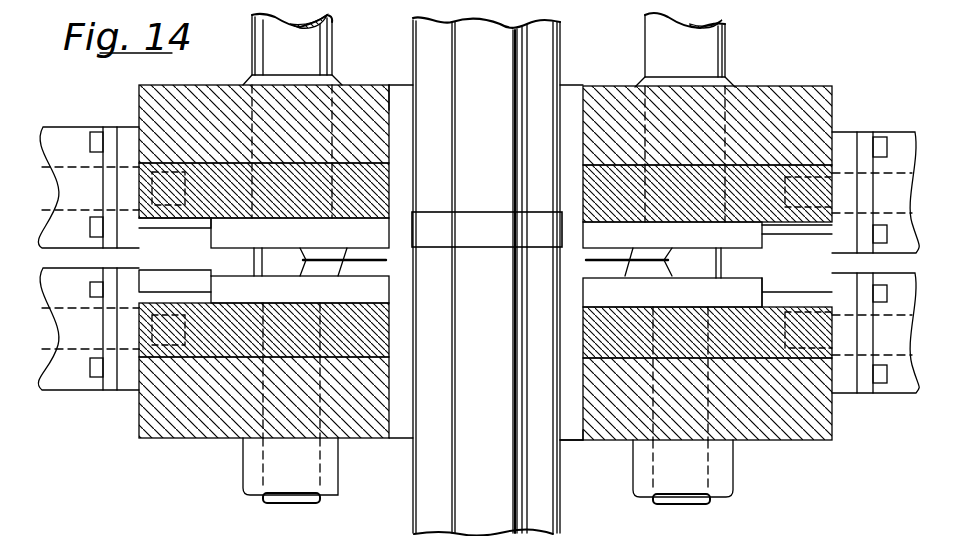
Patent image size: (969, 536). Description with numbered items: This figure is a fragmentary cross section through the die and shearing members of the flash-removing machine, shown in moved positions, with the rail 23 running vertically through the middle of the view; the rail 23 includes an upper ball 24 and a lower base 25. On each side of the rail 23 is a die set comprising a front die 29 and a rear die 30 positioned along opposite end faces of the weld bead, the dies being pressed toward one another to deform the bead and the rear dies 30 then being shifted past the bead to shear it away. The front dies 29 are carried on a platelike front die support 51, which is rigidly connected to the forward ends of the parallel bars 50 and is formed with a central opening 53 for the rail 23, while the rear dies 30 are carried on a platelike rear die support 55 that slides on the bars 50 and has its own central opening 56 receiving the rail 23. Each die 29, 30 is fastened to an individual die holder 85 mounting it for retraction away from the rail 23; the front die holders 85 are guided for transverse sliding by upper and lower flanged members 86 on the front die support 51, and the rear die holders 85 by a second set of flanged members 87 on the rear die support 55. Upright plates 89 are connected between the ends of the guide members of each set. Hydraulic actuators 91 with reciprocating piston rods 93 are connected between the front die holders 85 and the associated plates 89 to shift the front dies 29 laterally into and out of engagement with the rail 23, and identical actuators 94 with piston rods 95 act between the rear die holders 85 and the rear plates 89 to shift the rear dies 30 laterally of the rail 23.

The rail 23 is at (557, 55).
The upper ball 24 is at (465, 483).
The lower base 25 is at (418, 476).
The front die 29 is at (344, 277).
The rear die 30 is at (291, 256).
The bars 50 is at (320, 40).
The front die support 51 is at (808, 440).
The central opening 53 is at (573, 438).
The rear die support 55 is at (208, 100).
The central opening 56 is at (390, 98).
The die holder 85 is at (208, 203).
The flanged members 86 is at (188, 296).
The flanged members 87 is at (167, 225).
The upright plates 89 is at (130, 132).
The hydraulic actuators 91 is at (76, 401).
The piston rods 93 is at (72, 301).
The actuators 94 is at (72, 121).
The piston rods 95 is at (70, 157).